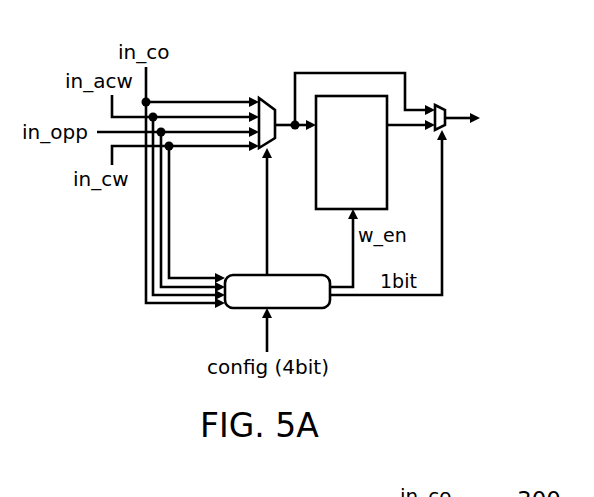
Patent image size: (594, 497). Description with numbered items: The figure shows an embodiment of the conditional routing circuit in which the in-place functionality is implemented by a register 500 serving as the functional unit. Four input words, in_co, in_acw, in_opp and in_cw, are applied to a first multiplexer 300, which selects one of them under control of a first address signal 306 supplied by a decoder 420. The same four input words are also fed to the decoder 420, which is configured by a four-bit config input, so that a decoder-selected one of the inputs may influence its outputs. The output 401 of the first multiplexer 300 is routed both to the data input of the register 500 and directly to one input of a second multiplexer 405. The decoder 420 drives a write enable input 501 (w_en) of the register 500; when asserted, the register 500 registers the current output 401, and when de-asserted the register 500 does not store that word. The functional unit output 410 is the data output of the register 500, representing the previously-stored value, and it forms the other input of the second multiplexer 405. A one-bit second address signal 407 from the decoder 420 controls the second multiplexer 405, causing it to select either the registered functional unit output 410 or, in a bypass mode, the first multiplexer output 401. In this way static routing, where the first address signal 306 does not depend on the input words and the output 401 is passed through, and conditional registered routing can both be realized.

The first multiplexer 300 is at (259, 98).
The output of first multiplexer 401 is at (347, 73).
The second multiplexer 405 is at (443, 105).
The functional unit output 410 is at (398, 128).
The second address signal 407 is at (443, 218).
The register 500 is at (376, 190).
The write enable input 501 is at (352, 247).
The first address signal 306 is at (266, 221).
The decoder 420 is at (328, 308).